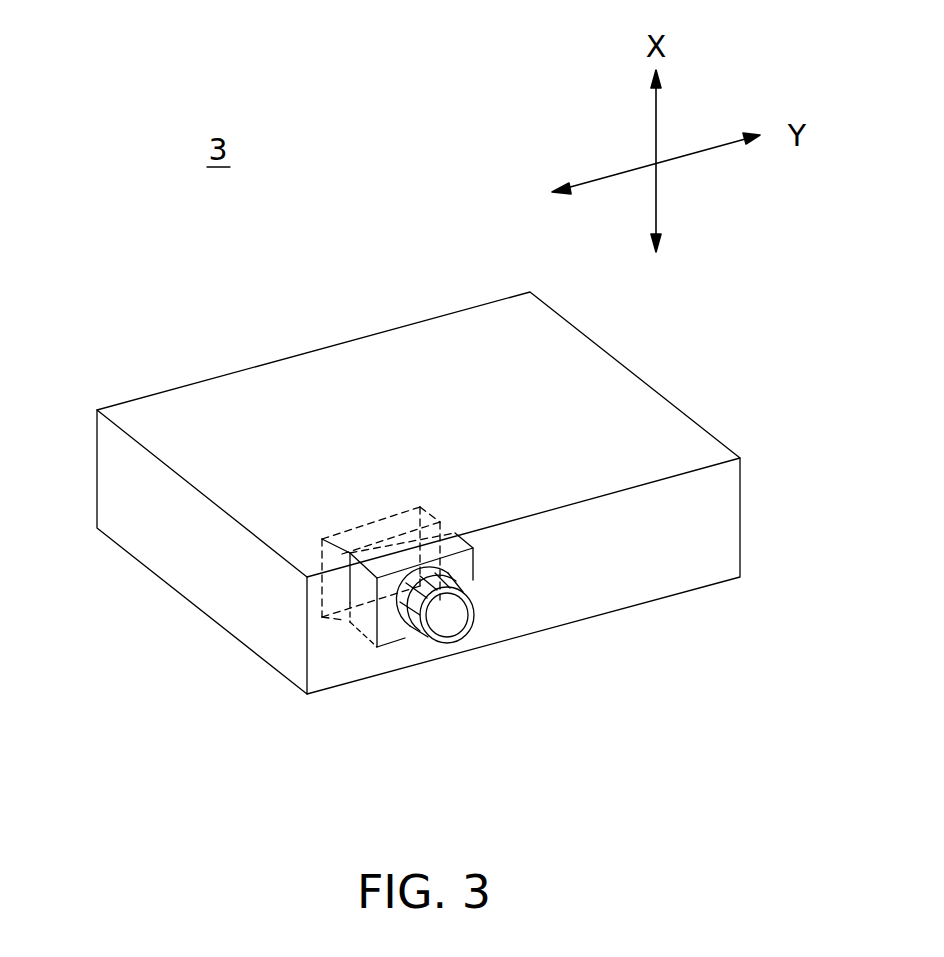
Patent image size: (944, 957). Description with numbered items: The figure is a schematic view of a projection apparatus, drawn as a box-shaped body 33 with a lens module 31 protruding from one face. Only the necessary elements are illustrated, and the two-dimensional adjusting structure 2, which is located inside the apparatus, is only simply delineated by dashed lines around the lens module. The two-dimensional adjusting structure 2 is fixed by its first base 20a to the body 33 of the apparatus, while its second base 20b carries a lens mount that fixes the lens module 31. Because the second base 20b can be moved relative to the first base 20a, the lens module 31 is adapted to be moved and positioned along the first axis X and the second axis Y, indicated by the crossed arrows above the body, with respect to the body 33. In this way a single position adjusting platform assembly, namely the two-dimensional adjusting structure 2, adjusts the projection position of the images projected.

The two-dimensional adjusting structure 2 is at (233, 792).
The first base 20a is at (322, 539).
The second base 20b is at (357, 614).
The lens module 31 is at (460, 637).
The body 33 is at (203, 452).